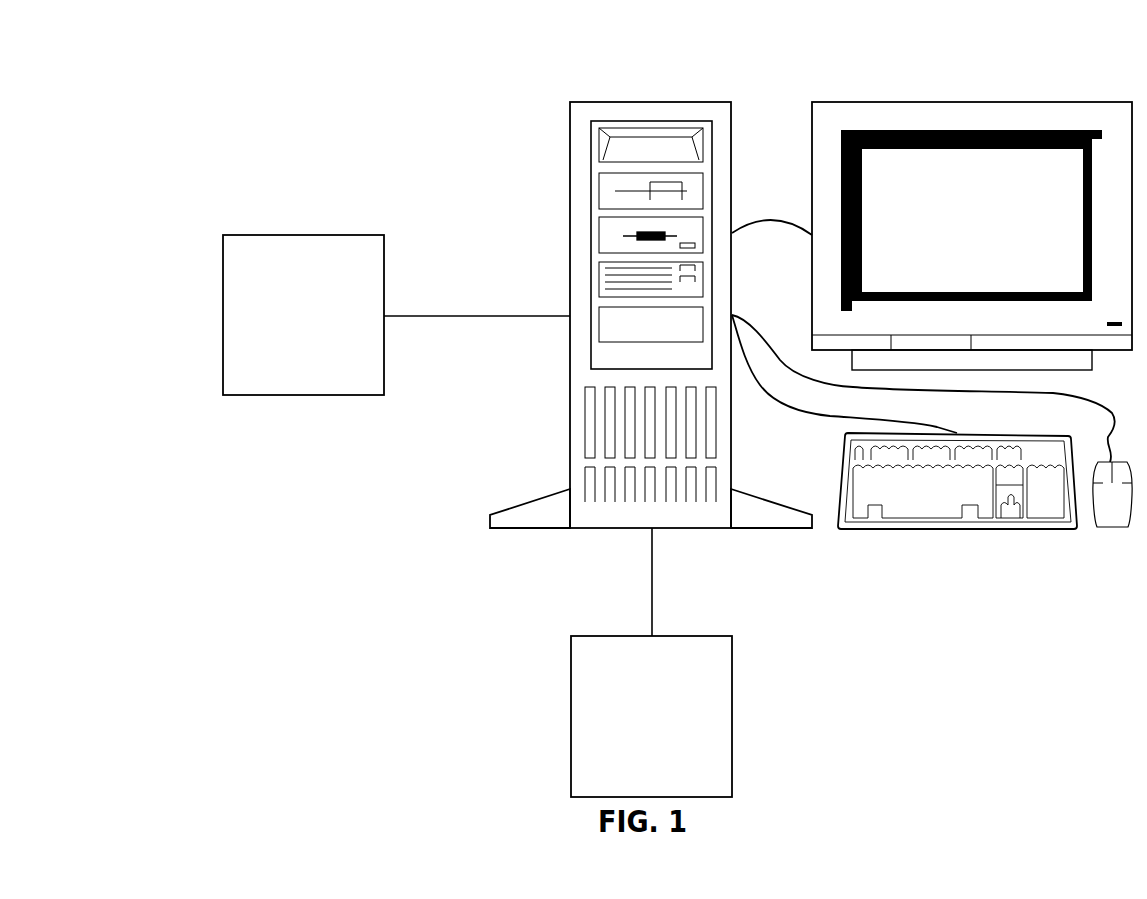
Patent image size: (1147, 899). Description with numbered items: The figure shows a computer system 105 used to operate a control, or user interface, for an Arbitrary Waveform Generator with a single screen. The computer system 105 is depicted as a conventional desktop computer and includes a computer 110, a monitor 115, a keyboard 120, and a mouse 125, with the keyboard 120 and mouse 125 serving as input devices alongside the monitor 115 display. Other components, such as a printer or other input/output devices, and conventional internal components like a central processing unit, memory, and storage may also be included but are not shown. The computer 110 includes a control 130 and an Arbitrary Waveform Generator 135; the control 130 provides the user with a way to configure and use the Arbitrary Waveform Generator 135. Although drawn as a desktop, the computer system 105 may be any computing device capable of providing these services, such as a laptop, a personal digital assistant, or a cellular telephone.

The computer system 105 is at (426, 33).
The computer 110 is at (613, 102).
The monitor 115 is at (853, 102).
The keyboard 120 is at (880, 529).
The mouse 125 is at (1110, 530).
The control 130 is at (265, 235).
The Arbitrary Waveform Generator 135 is at (613, 636).